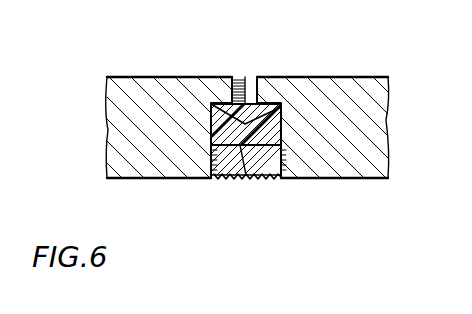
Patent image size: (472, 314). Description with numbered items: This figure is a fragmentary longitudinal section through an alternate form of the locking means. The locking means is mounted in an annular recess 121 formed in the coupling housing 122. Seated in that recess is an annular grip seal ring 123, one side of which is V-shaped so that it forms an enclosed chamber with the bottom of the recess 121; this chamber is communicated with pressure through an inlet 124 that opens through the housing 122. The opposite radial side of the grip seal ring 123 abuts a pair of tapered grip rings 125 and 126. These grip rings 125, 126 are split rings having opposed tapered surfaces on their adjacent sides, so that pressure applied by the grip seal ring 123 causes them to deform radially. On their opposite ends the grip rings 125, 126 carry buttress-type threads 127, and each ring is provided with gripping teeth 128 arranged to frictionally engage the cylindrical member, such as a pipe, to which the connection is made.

The annular recess 121 is at (214, 102).
The coupling housing 122 is at (283, 77).
The annular grip seal ring 123 is at (285, 125).
The inlet 124 is at (243, 77).
The tapered grip ring 125 is at (220, 178).
The tapered grip ring 126 is at (282, 181).
The buttress-type threads 127 is at (208, 155).
The gripping teeth 128 is at (262, 180).